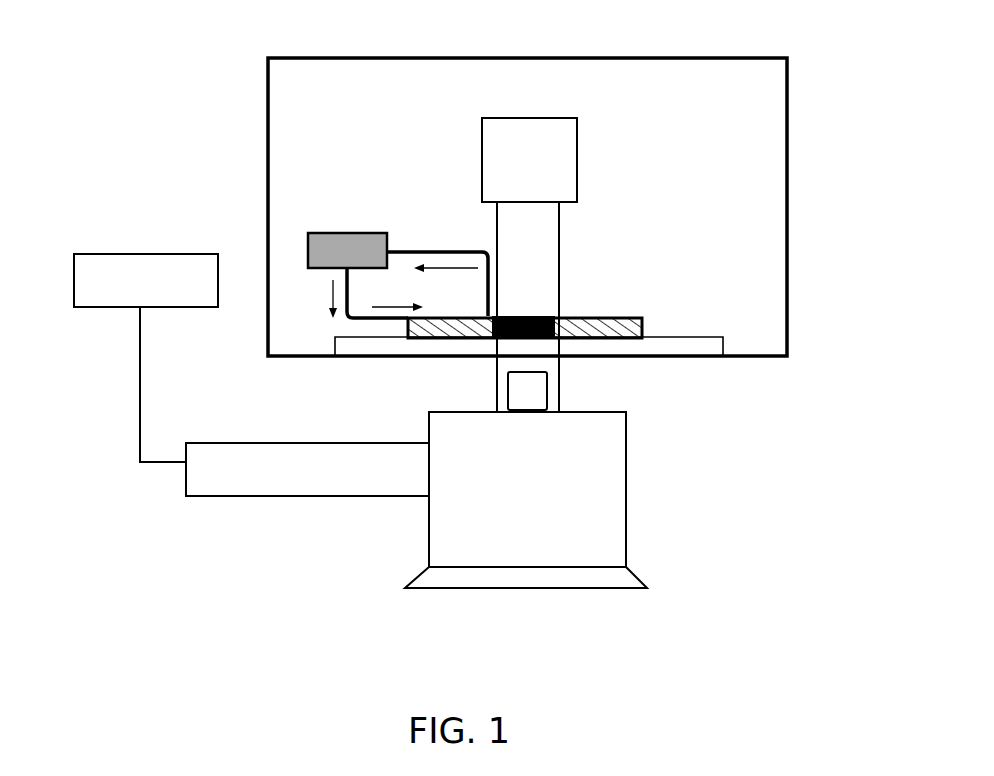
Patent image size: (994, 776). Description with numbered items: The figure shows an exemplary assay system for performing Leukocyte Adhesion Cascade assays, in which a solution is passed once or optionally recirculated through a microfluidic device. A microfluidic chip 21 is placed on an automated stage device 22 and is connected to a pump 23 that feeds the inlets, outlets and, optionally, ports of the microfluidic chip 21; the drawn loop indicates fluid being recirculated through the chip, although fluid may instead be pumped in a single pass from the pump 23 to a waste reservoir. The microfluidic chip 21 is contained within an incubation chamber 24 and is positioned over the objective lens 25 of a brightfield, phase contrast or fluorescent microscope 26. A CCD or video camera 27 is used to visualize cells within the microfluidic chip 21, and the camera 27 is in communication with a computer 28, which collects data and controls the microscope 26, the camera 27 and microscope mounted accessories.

The microfluidic chip 21 is at (550, 316).
The automated stage device 22 is at (645, 319).
The pump 23 is at (398, 275).
The incubation chamber 24 is at (429, 58).
The objective lens 25 is at (533, 388).
The microscope 26 is at (526, 500).
The camera 27 is at (307, 469).
The computer 28 is at (146, 358).